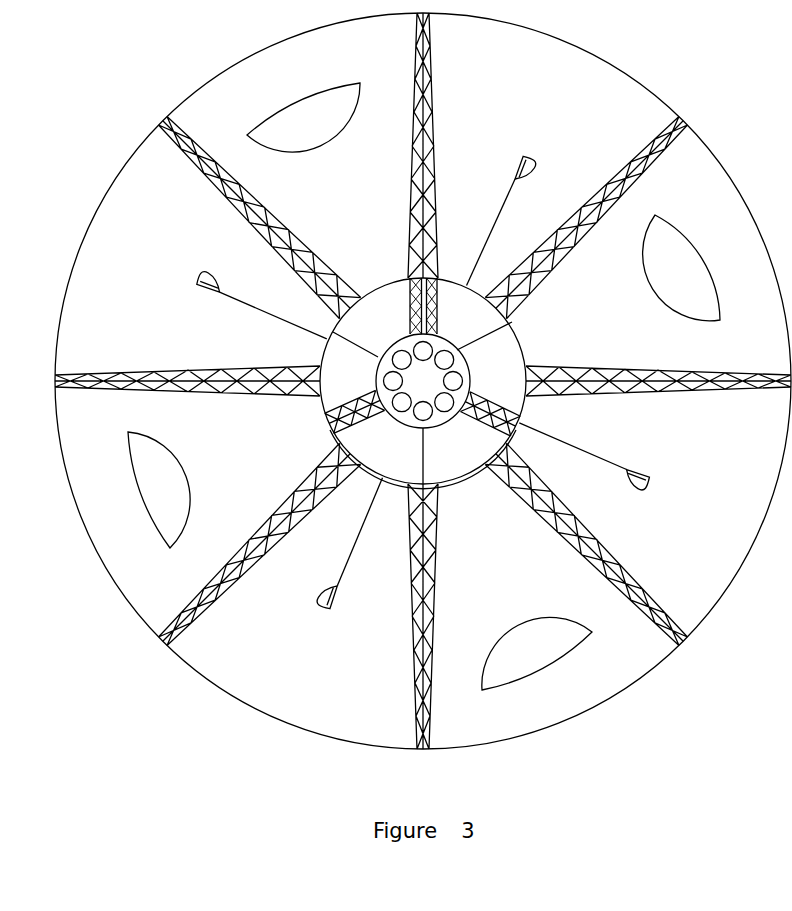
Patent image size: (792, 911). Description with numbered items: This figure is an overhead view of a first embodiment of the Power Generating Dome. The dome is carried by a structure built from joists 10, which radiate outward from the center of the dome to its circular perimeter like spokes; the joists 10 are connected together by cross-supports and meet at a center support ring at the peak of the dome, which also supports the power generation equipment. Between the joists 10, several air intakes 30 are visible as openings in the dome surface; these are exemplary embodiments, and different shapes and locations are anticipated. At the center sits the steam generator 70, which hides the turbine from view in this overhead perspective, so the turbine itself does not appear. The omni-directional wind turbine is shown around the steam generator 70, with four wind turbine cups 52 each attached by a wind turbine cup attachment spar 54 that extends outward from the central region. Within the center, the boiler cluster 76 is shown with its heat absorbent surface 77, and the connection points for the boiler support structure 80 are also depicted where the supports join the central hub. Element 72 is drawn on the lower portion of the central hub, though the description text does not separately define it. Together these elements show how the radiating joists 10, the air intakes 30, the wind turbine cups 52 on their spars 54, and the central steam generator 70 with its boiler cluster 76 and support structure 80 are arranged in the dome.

The joist 10 is at (432, 101).
The air intake 30 is at (296, 101).
The wind turbine cup 52 is at (531, 171).
The wind turbine cup attachment spar 54 is at (499, 219).
The steam generator 70 is at (530, 341).
The hub ring 72 is at (462, 471).
The boiler cluster 76 is at (452, 352).
The heat absorbent surface 77 is at (423, 381).
The boiler support structure 80 is at (478, 399).